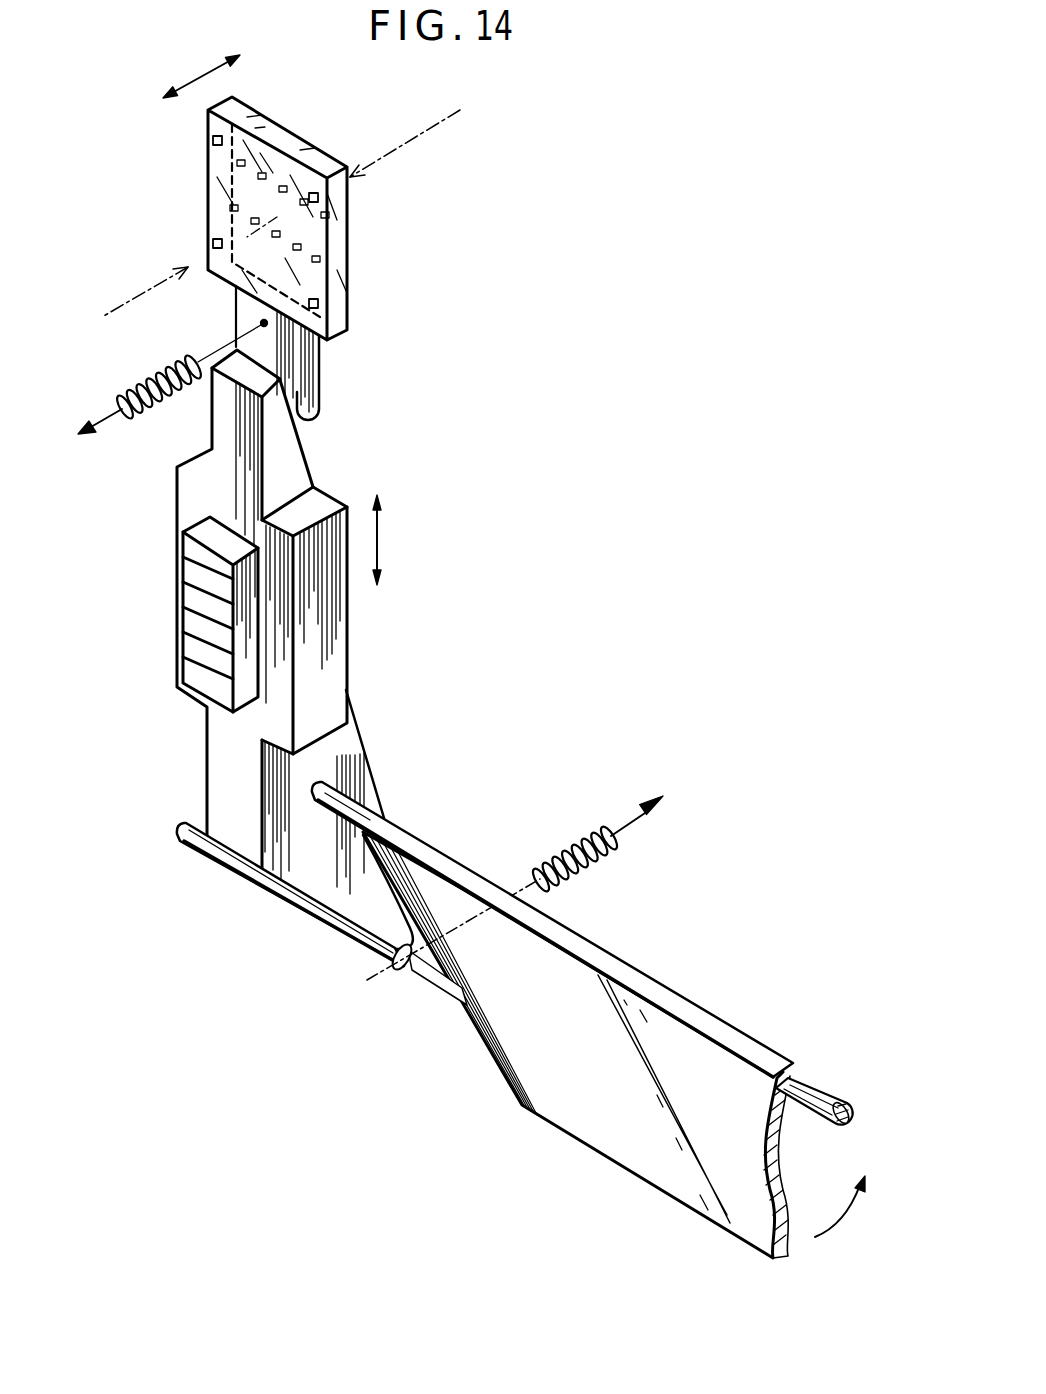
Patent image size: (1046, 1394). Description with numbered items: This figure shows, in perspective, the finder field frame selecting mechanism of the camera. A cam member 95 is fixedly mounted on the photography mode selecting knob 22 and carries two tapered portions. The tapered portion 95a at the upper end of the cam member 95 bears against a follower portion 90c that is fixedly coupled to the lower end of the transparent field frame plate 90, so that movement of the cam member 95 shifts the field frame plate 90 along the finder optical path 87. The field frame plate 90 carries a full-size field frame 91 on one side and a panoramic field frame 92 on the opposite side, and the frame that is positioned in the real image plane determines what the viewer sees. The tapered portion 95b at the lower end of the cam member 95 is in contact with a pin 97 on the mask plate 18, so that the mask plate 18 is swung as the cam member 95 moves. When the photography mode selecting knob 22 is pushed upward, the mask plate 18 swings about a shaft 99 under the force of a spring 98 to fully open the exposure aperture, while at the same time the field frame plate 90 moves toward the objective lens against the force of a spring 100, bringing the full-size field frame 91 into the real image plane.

The mask plate 18 is at (643, 1167).
The photography mode selecting knob 22 is at (203, 617).
The finder optical path 87 is at (435, 128).
The field frame plate 90 is at (270, 218).
The follower portion 90c is at (318, 407).
The full-size field frame 91 is at (217, 140).
The panoramic field frame 92 is at (333, 270).
The cam member 95 is at (318, 622).
The tapered portion 95a is at (311, 467).
The tapered portion 95b is at (392, 957).
The pin 97 is at (437, 998).
The spring 98 is at (578, 833).
The shaft 99 is at (813, 1092).
The spring 100 is at (150, 412).